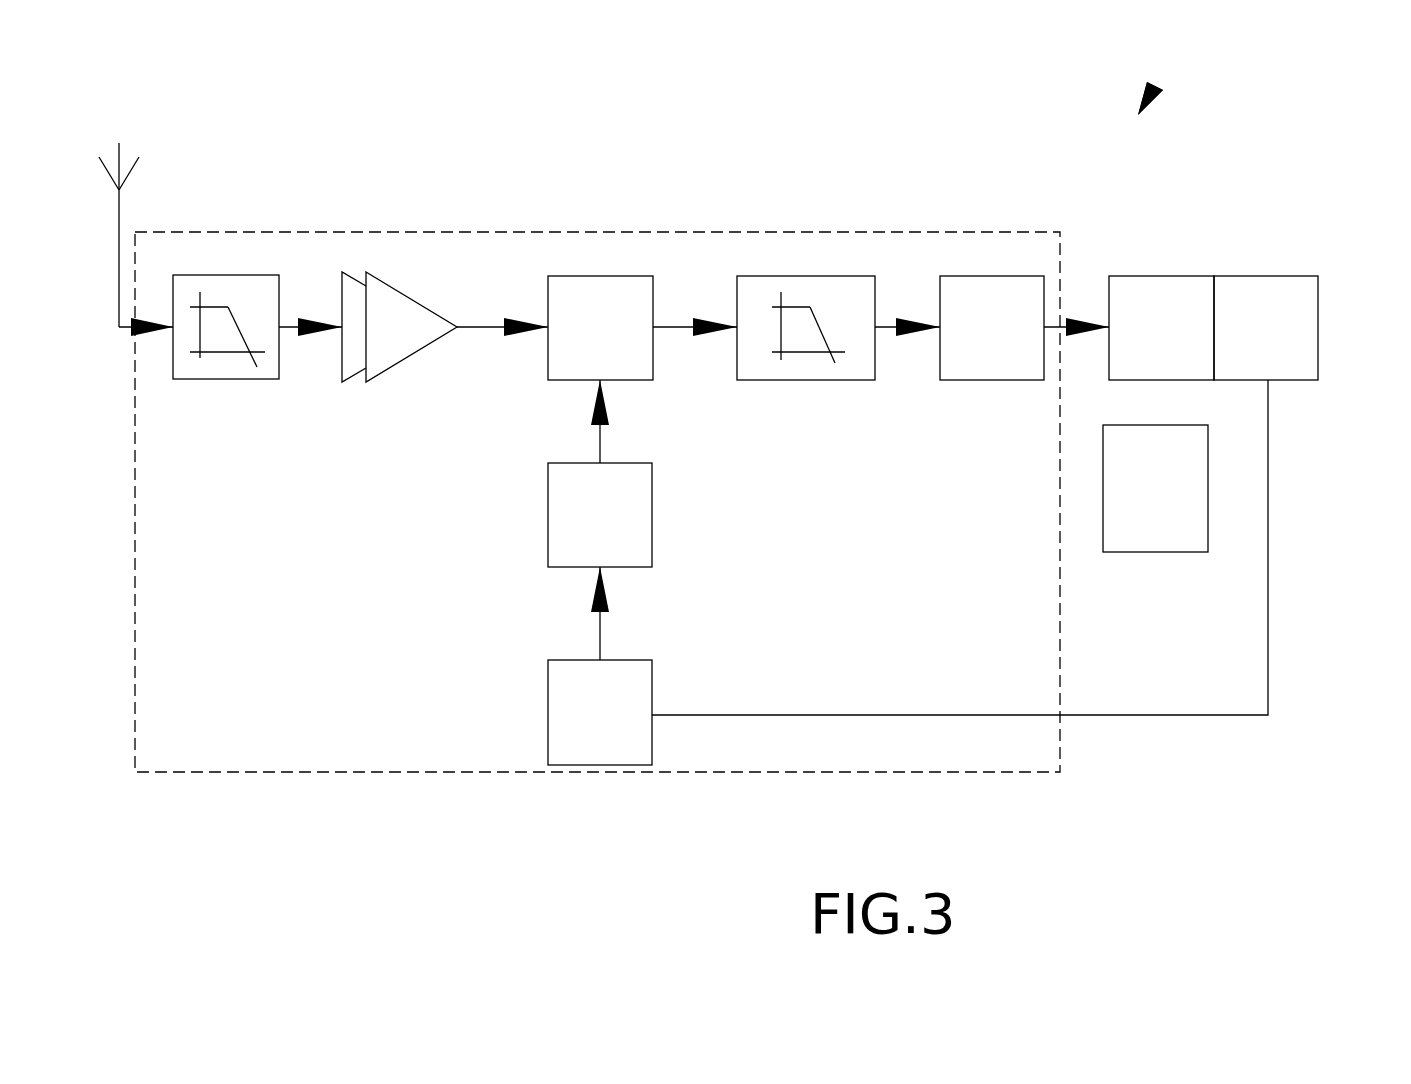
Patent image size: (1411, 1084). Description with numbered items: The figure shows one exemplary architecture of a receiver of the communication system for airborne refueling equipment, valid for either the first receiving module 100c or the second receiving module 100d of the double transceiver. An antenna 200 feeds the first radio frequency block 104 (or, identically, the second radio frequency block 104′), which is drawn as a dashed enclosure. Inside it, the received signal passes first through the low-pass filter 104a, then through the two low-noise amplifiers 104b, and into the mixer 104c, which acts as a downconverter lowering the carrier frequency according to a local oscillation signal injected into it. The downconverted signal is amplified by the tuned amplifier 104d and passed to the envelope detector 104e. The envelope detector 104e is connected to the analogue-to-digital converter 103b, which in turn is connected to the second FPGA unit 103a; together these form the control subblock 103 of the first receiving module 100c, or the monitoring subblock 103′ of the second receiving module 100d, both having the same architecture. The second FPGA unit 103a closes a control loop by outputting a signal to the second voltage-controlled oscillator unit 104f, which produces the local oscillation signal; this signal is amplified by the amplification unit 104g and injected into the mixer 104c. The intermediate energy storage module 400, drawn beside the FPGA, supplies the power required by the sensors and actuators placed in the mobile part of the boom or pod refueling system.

The first receiving module 100c is at (1153, 86).
The second receiving module 100d is at (1210, 80).
The antenna 200 is at (120, 212).
The first radio frequency block 104 is at (693, 537).
The second radio frequency block 104′ is at (1059, 808).
The low-pass filter 104a is at (185, 379).
The low-noise amplifiers 104b is at (380, 272).
The mixer 104c is at (620, 276).
The tuned amplifier 104d is at (750, 380).
The envelope detector 104e is at (957, 276).
The second voltage-controlled oscillator unit 104f is at (548, 675).
The amplification unit 104g is at (548, 483).
The control subblock 103 is at (1198, 548).
The monitoring subblock 103′ is at (1268, 807).
The second FPGA unit 103a is at (1300, 276).
The analogue-to-digital converter 103b is at (1122, 276).
The intermediate energy storage module 400 is at (1208, 448).